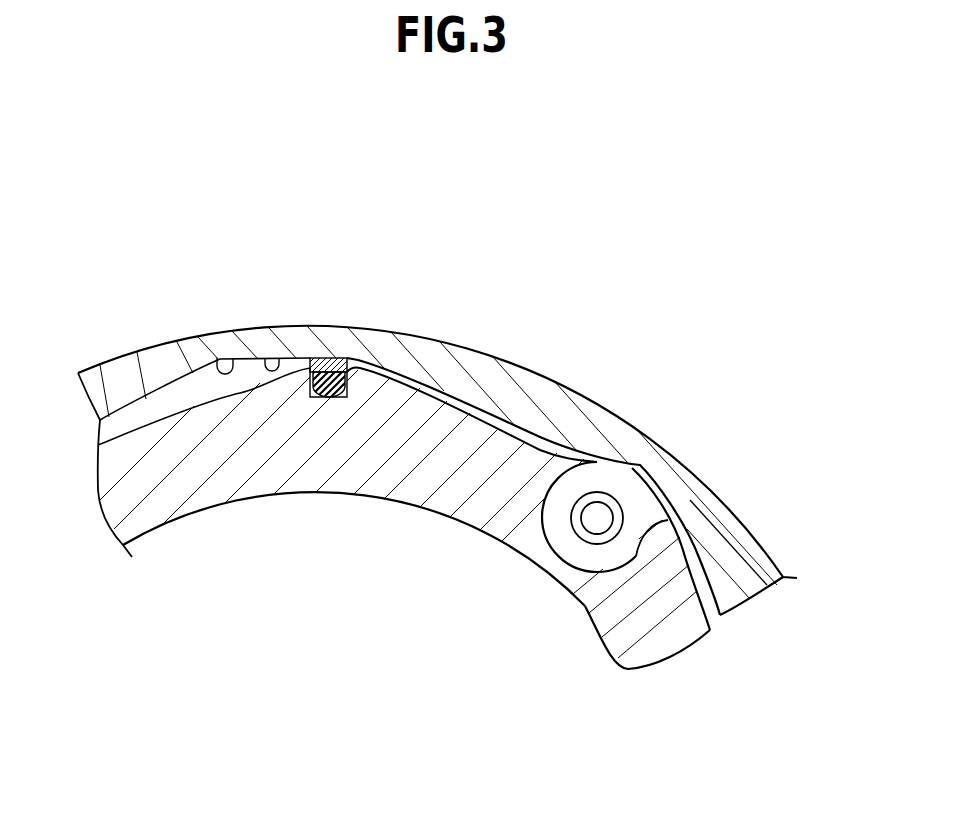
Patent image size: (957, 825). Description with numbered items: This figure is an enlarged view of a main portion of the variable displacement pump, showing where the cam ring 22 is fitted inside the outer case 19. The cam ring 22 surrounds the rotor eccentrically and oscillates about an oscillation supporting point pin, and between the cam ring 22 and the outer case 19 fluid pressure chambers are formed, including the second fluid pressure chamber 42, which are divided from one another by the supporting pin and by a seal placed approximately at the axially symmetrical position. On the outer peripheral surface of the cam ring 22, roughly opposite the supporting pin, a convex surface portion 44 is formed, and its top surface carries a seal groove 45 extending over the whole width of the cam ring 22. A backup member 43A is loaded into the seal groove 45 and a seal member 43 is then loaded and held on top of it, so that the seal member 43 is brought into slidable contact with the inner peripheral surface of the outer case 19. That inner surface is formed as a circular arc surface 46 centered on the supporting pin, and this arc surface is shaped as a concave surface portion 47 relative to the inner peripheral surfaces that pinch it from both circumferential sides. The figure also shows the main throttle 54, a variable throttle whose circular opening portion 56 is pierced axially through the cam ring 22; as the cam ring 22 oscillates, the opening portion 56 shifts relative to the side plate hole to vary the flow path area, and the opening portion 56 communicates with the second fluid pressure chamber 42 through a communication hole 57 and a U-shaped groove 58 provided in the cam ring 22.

The outer case 19 is at (162, 362).
The cam ring 22 is at (115, 503).
The second fluid pressure chamber 42 is at (697, 565).
The seal member 43 is at (332, 358).
The backup member 43A is at (313, 380).
The convex surface portion 44 is at (357, 358).
The seal groove 45 is at (327, 393).
The circular arc surface 46 is at (268, 358).
The concave surface portion 47 is at (225, 357).
The main throttle 54 is at (605, 475).
The circular opening portion 56 is at (617, 507).
The communication hole 57 is at (598, 519).
The U-shaped groove 58 is at (673, 517).